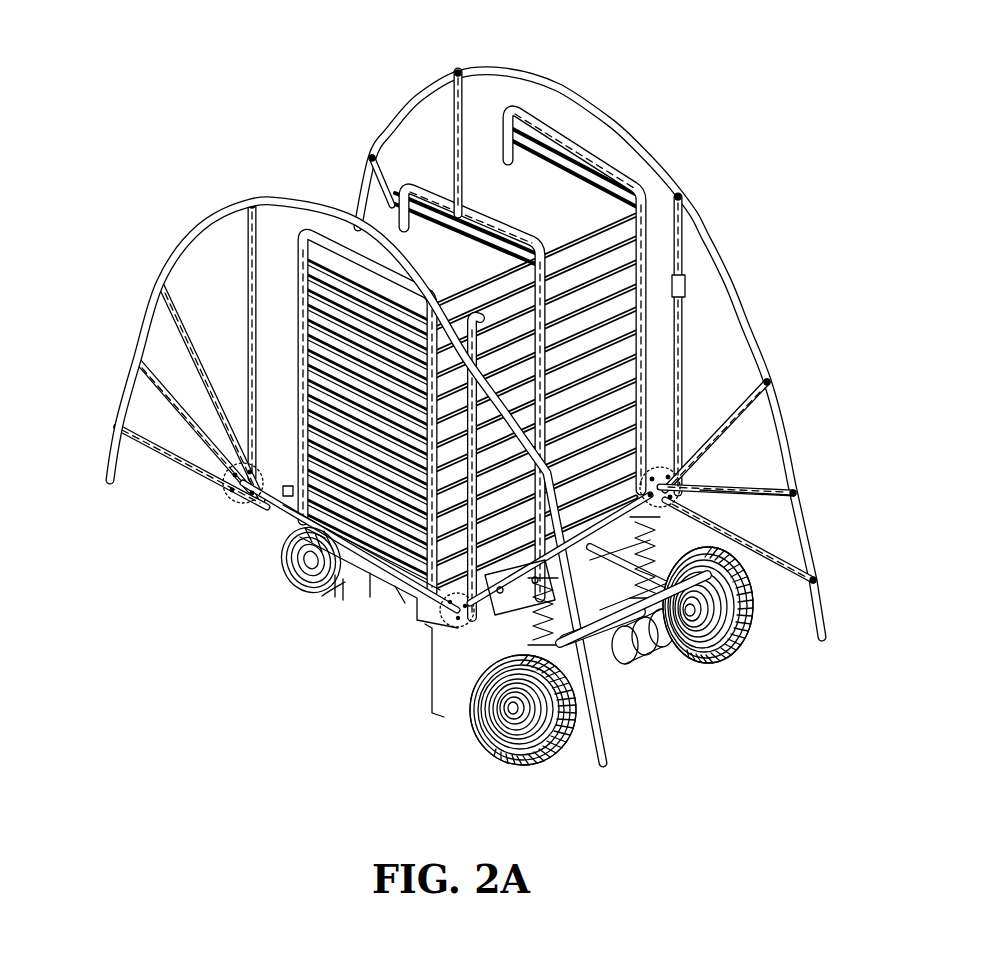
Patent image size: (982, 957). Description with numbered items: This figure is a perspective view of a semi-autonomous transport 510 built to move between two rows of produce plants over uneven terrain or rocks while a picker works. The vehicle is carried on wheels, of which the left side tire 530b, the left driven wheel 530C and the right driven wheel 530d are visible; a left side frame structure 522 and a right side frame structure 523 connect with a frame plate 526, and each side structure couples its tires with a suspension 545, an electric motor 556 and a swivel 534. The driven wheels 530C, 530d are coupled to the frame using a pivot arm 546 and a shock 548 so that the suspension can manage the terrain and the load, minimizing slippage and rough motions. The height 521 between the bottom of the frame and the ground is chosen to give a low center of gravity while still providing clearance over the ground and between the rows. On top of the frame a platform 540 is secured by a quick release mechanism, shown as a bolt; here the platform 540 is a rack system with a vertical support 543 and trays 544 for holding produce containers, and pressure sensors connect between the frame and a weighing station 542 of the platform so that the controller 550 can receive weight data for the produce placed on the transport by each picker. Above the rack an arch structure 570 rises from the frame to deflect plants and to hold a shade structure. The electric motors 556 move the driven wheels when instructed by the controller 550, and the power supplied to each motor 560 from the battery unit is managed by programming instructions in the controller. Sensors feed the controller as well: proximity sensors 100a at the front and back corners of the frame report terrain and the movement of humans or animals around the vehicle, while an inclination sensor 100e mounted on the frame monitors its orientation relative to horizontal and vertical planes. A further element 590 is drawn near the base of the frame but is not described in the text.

The transport 510 is at (152, 128).
The platform 540 is at (350, 180).
The motor 560 is at (602, 112).
The arch structure 570 is at (185, 302).
The vertical support 543 is at (605, 212).
The trays 544 is at (645, 232).
The inclination sensor 100e is at (688, 285).
The weighing station 542 is at (265, 498).
The right side frame structure 523 is at (700, 490).
The shock 548 is at (658, 563).
The wheel 530d is at (748, 655).
The pivot arm 546 is at (665, 655).
The proximity sensor 100a is at (290, 488).
The electric motor 556 is at (612, 662).
The suspension 545 is at (660, 752).
The wheel 530C is at (515, 755).
The height 521 is at (428, 680).
The compartment 590 is at (405, 603).
The controller 550 is at (380, 590).
The left side frame structure 522 is at (460, 612).
The frame plate 526 is at (328, 596).
The tire 530b is at (290, 572).
The swivel 534 is at (285, 553).